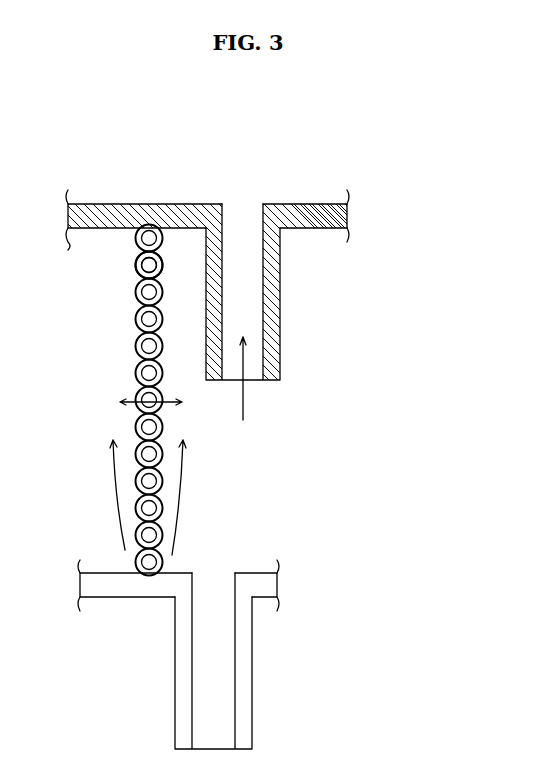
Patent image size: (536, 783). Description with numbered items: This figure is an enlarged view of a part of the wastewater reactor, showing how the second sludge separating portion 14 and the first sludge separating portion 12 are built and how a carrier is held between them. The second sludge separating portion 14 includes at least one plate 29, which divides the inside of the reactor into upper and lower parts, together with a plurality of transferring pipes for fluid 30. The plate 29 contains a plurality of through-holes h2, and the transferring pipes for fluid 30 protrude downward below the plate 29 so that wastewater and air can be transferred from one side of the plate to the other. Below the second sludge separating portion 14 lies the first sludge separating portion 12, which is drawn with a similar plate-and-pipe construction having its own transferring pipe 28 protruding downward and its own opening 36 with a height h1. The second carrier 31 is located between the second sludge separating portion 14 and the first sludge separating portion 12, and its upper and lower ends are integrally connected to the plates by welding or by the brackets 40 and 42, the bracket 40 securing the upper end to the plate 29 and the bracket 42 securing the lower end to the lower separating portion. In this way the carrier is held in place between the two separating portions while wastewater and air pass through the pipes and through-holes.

The first sludge separating portion 12 is at (269, 566).
The second sludge separating portion 14 is at (332, 196).
The lower passage 28 is at (252, 667).
The plate 29 is at (161, 205).
The transferring pipe for fluid 30 is at (280, 302).
The second carrier 31 is at (136, 266).
The lower opening 36 is at (184, 573).
The bracket 40 is at (144, 226).
The bracket 42 is at (148, 600).
The lower passage height h1 is at (207, 583).
The through-hole h2 is at (240, 220).